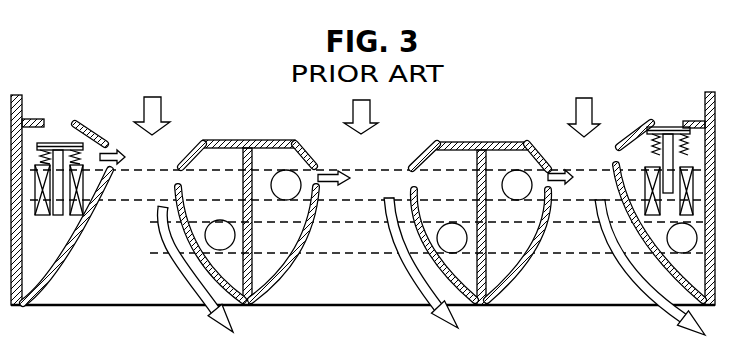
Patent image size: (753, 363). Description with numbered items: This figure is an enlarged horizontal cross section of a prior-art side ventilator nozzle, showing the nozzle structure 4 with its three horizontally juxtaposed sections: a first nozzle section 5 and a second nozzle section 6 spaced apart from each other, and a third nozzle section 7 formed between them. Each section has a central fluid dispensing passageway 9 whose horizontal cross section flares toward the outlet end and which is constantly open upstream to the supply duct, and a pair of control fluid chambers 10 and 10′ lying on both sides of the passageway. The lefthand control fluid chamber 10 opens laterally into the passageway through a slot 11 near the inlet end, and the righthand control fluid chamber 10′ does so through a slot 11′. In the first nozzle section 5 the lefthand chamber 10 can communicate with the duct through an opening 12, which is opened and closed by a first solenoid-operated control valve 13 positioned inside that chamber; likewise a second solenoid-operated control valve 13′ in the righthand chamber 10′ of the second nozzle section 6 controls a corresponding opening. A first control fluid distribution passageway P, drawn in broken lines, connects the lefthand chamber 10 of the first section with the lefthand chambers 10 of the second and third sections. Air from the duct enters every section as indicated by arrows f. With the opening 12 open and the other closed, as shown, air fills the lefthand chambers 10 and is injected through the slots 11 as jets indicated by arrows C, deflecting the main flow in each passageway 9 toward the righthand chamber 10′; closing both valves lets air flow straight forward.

The nozzle structure 4 is at (9, 104).
The first nozzle section 5 is at (116, 306).
The second nozzle section 6 is at (555, 307).
The third nozzle section 7 is at (348, 306).
The fluid dispensing passageway 9 is at (126, 267).
The lefthand control fluid chamber 10 is at (45, 275).
The righthand control fluid chamber 10′ is at (228, 297).
The slot 11 is at (112, 128).
The slot 11′ is at (177, 190).
The opening 12 is at (43, 124).
The first solenoid-operated control valve 13 is at (58, 218).
The second solenoid-operated control valve 13′ is at (697, 157).
The first control fluid distribution passageway P is at (456, 170).
The arrows f is at (161, 104).
The arrows c C is at (126, 157).